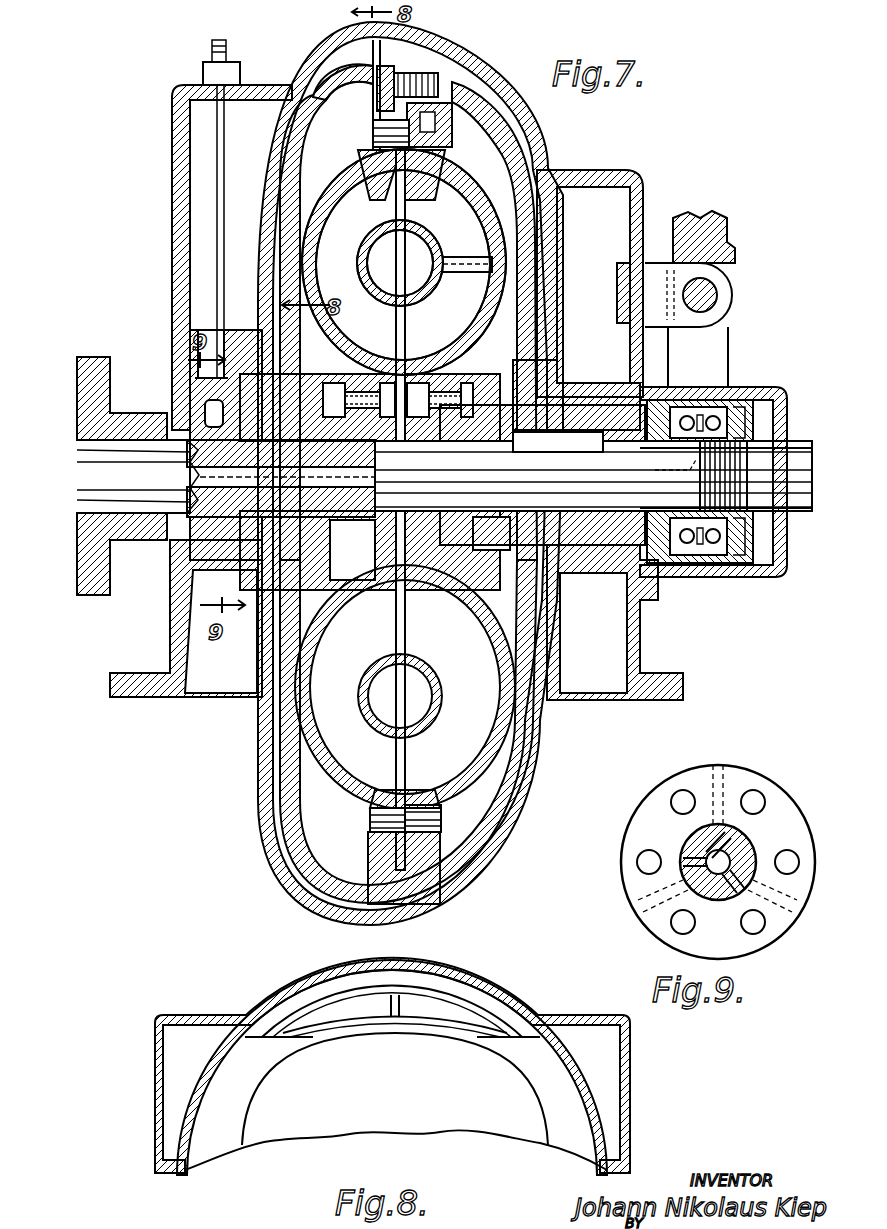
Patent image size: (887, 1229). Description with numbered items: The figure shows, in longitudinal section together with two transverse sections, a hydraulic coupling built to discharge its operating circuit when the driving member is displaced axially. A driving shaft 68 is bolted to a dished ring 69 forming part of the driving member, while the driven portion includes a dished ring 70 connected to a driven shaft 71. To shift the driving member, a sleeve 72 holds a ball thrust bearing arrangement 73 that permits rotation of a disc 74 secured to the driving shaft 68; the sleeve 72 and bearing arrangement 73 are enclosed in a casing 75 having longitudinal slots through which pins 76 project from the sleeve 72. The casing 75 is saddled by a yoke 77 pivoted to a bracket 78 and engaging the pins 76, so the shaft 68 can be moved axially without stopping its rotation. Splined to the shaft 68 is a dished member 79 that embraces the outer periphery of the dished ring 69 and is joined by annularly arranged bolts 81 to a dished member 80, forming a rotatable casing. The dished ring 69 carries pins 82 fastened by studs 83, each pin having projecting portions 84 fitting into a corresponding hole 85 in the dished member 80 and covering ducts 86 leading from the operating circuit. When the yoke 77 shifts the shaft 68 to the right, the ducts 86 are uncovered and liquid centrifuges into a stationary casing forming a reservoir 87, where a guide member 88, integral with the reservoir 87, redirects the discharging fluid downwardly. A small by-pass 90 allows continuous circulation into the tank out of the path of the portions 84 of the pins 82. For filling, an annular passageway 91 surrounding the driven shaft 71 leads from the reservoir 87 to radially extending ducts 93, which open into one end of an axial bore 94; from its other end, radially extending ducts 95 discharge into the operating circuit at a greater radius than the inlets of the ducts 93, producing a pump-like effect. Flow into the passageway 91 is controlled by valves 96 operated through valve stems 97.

In FIG. 7, the driving shaft 68 is at (790, 472).
In FIG. 7, the dished ring 69 is at (455, 185).
In FIG. 7, the dished ring 70 is at (340, 362).
In FIG. 7, the driven shaft 71 is at (95, 472).
In FIG. 9, the driven shaft 71 is at (748, 845).
In FIG. 7, the sleeve 72 is at (655, 562).
In FIG. 7, the ball thrust bearing arrangement 73 is at (715, 558).
In FIG. 7, the disc 74 is at (690, 410).
In FIG. 7, the casing 75 is at (788, 403).
In FIG. 7, the pins 76 is at (655, 470).
In FIG. 7, the yoke 77 is at (720, 335).
In FIG. 7, the bracket 78 is at (656, 260).
In FIG. 7, the dished member 79 is at (512, 150).
In FIG. 7, the dished member 80 is at (290, 238).
In FIG. 7, the bolts 81 is at (432, 76).
In FIG. 7, the pins 82 is at (378, 135).
In FIG. 7, the studs 83 is at (452, 117).
In FIG. 7, the projecting portions 84 is at (372, 822).
In FIG. 7, the hole 85 is at (370, 856).
In FIG. 7, the ducts 86 is at (410, 172).
In FIG. 7, the reservoir 87 is at (232, 257).
In FIG. 8, the reservoir 87 is at (228, 1140).
In FIG. 7, the guide member 88 is at (318, 92).
In FIG. 8, the guide member 88 is at (396, 990).
In FIG. 7, the by-pass 90 is at (372, 180).
In FIG. 7, the annular passageway 91 is at (205, 415).
In FIG. 7, the radially extending ducts 93 is at (192, 456).
In FIG. 9, the radially extending ducts 93 is at (700, 858).
In FIG. 7, the axial bore 94 is at (215, 538).
In FIG. 9, the axial bore 94 is at (730, 875).
In FIG. 7, the radially extending ducts 95 is at (378, 582).
In FIG. 9, the radially extending ducts 95 is at (640, 890).
In FIG. 7, the valves 96 is at (196, 372).
In FIG. 7, the valve stems 97 is at (215, 172).